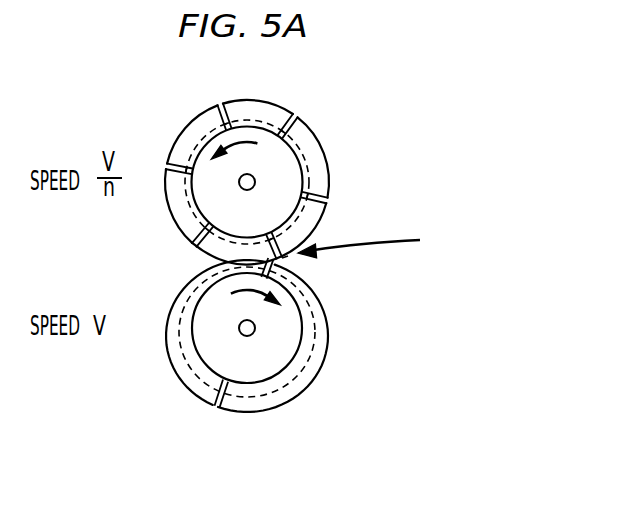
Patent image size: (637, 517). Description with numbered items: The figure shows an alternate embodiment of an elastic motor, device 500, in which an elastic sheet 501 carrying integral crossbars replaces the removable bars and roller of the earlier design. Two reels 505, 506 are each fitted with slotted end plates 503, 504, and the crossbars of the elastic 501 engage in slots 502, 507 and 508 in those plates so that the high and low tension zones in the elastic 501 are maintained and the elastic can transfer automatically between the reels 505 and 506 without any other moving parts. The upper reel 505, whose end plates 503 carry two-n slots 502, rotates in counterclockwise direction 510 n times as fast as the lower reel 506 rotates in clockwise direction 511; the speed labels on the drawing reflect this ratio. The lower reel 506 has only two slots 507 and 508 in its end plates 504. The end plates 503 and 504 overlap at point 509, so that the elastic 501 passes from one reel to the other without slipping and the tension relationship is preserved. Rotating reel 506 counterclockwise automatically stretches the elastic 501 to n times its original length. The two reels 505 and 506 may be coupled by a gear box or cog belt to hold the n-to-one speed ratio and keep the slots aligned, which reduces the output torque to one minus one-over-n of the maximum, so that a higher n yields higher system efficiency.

The device 500 is at (534, 55).
The elastic sheet 501 is at (308, 315).
The slots 502 is at (305, 118).
The reel end plates 503 is at (172, 142).
The reel end plates 504 is at (172, 365).
The reel 505 is at (272, 202).
The reel 506 is at (278, 347).
The slot 507 is at (216, 408).
The slot 508 is at (288, 256).
The point 509 is at (375, 243).
The counterclockwise direction 510 is at (239, 158).
The clockwise direction 511 is at (252, 306).